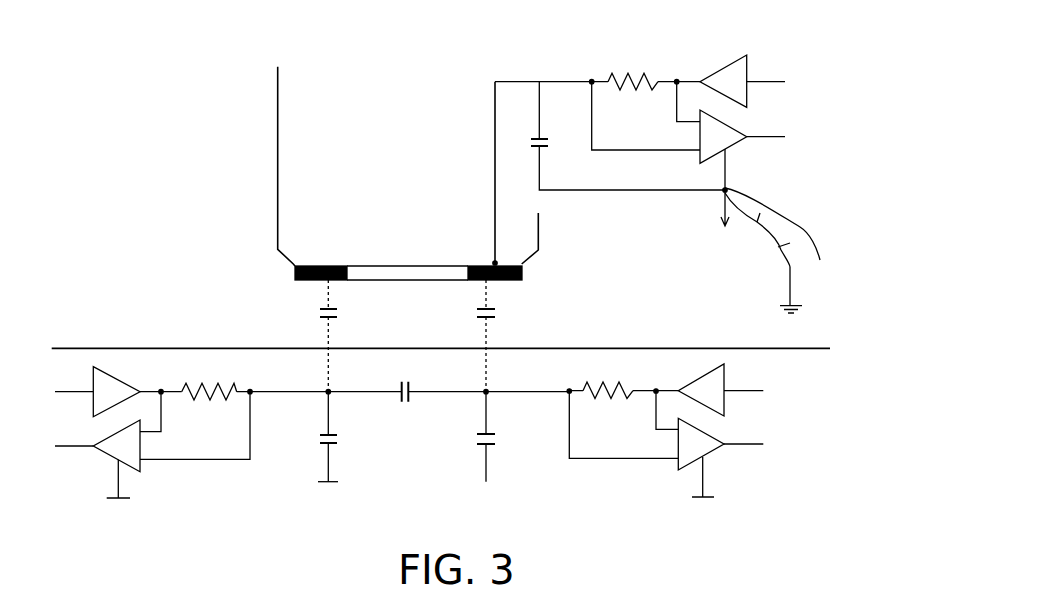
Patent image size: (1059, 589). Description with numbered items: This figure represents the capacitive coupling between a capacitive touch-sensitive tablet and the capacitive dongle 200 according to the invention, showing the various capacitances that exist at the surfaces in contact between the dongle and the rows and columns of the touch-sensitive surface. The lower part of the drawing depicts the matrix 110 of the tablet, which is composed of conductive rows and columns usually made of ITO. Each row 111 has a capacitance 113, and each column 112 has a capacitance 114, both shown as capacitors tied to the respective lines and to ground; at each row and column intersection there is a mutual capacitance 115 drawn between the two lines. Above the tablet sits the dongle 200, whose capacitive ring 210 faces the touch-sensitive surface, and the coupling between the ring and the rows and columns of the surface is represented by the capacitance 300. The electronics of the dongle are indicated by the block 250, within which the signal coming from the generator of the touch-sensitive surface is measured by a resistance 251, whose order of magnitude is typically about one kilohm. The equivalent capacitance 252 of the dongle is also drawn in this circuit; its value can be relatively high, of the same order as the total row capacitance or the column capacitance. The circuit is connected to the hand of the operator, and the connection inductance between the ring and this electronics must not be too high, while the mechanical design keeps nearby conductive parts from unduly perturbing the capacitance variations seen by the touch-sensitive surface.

The matrix 110 is at (109, 317).
The row 111 is at (288, 396).
The column 112 is at (535, 395).
The capacitance 113 is at (338, 440).
The capacitance 114 is at (477, 435).
The mutual capacitance 115 is at (407, 380).
The capacitive dongle 200 is at (249, 142).
The capacitive ring 210 is at (315, 263).
The detection circuit 250 is at (623, 222).
The resistance 251 is at (632, 73).
The equivalent capacitance 252 is at (549, 146).
The capacitance 300 is at (497, 309).